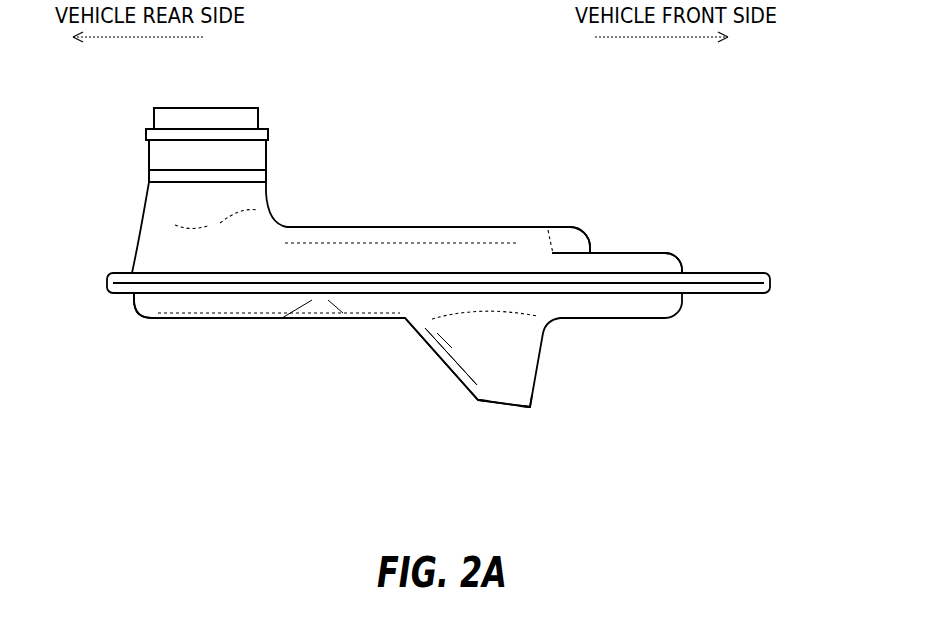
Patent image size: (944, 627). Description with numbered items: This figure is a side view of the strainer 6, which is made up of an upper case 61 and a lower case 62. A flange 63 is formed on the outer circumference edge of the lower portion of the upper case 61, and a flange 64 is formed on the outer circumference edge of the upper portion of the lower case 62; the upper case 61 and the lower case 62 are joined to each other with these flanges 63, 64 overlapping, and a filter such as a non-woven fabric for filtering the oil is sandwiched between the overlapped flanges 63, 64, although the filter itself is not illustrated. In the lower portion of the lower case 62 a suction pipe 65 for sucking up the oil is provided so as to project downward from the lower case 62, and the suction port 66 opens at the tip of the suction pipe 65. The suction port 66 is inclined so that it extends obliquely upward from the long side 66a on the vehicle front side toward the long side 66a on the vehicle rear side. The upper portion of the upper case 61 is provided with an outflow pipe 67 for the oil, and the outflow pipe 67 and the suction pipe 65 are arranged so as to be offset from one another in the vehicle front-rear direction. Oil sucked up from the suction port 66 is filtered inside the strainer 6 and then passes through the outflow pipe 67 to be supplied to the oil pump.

The strainer 6 is at (635, 195).
The upper case 61 is at (457, 227).
The lower case 62 is at (210, 318).
The flange 63 is at (737, 272).
The flange 64 is at (735, 295).
The suction pipe 65 is at (447, 372).
The suction port 66 is at (515, 407).
The long side 66a is at (478, 400).
The outflow pipe 67 is at (147, 155).